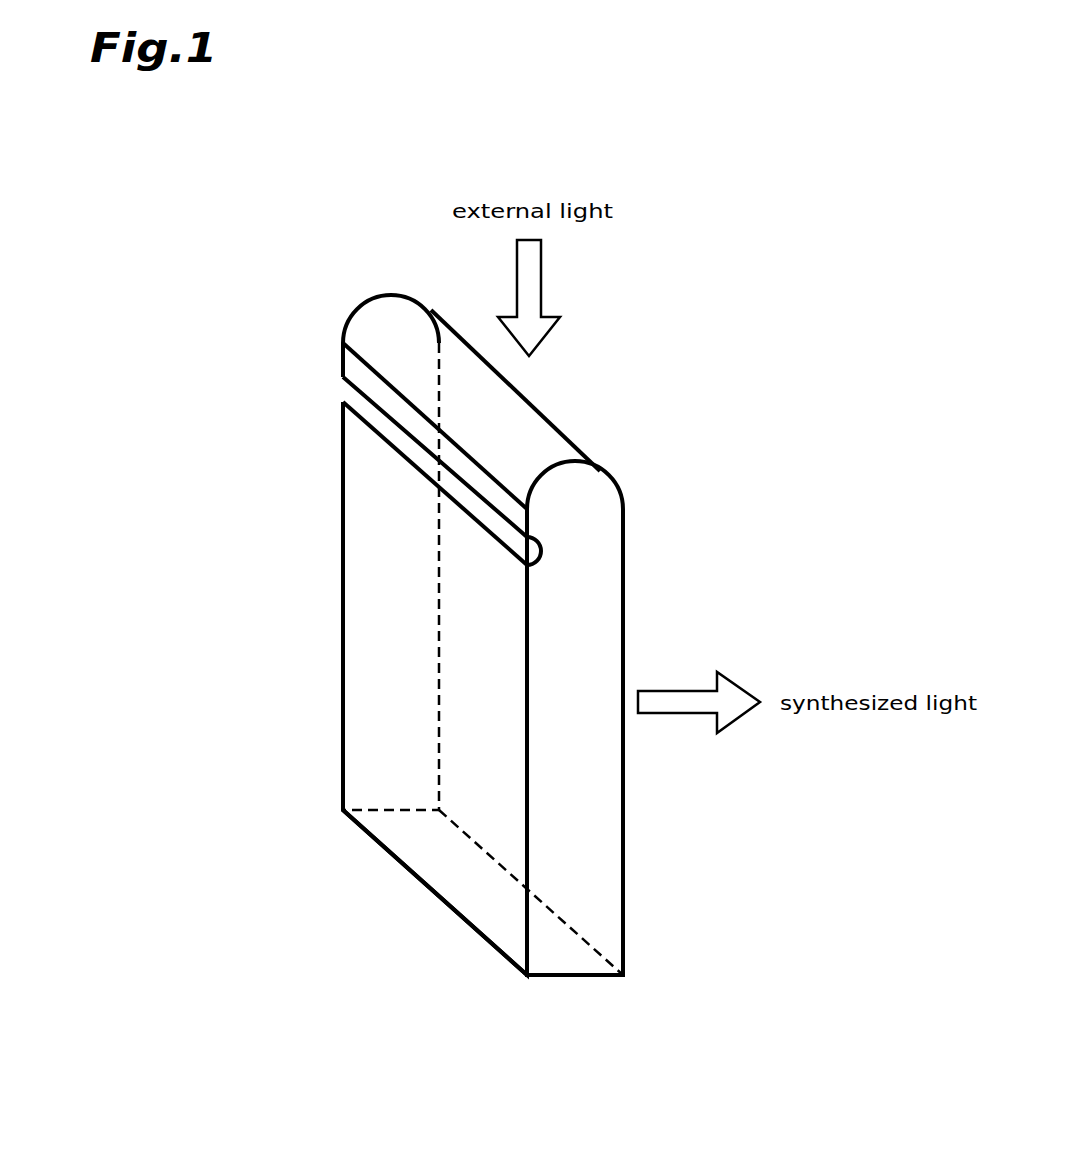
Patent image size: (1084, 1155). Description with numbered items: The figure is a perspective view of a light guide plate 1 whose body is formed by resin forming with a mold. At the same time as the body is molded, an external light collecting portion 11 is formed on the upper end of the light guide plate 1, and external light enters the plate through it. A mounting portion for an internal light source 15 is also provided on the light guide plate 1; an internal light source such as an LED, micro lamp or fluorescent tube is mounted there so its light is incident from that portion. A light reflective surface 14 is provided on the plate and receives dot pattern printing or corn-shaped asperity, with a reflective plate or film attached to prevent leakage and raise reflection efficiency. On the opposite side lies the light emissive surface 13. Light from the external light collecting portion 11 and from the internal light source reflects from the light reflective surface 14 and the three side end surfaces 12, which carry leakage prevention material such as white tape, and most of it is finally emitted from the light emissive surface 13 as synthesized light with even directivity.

The light guide plate 1 is at (474, 635).
The external light collecting portion 11 is at (532, 438).
The side end surfaces 12 is at (387, 580).
The light emissive surface 13 is at (583, 670).
The light reflective surface 14 is at (385, 710).
The mounting portion for an internal light source 15 is at (366, 407).